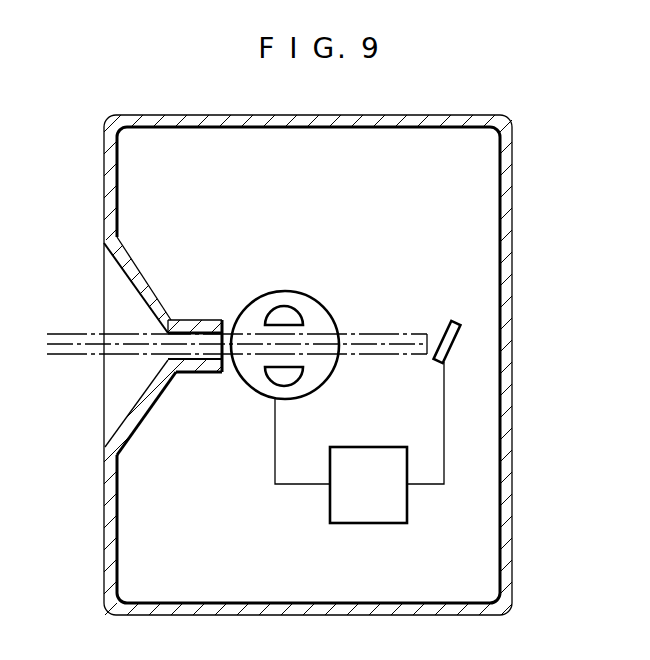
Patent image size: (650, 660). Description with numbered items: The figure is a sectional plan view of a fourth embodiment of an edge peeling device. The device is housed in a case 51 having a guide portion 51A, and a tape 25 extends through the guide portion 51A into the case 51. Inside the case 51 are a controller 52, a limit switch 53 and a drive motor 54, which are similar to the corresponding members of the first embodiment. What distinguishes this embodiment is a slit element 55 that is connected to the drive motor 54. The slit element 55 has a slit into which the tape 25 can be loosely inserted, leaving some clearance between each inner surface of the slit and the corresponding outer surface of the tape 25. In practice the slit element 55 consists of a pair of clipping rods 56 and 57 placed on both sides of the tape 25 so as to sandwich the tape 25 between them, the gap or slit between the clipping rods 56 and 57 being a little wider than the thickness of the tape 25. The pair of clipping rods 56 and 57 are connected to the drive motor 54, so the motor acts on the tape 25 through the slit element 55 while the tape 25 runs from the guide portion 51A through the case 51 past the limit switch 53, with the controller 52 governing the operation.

The tape 25 is at (73, 333).
The case 51 is at (513, 155).
The guide portion 51A is at (137, 410).
The controller 52 is at (397, 524).
The limit switch 53 is at (457, 340).
The drive motor 54 is at (236, 372).
The slit element 55 is at (310, 332).
The clipping rod 56 is at (277, 308).
The clipping rod 57 is at (265, 380).